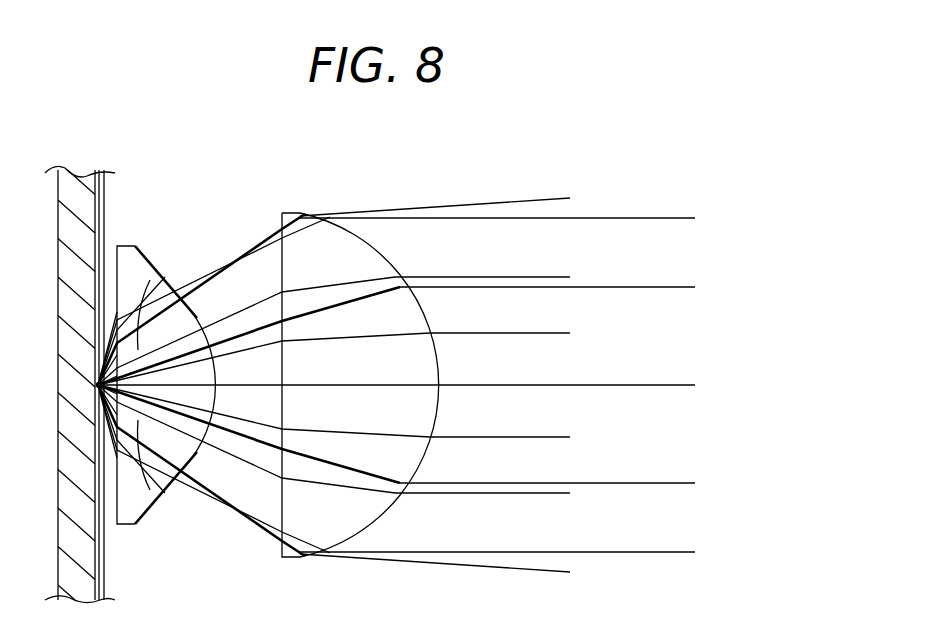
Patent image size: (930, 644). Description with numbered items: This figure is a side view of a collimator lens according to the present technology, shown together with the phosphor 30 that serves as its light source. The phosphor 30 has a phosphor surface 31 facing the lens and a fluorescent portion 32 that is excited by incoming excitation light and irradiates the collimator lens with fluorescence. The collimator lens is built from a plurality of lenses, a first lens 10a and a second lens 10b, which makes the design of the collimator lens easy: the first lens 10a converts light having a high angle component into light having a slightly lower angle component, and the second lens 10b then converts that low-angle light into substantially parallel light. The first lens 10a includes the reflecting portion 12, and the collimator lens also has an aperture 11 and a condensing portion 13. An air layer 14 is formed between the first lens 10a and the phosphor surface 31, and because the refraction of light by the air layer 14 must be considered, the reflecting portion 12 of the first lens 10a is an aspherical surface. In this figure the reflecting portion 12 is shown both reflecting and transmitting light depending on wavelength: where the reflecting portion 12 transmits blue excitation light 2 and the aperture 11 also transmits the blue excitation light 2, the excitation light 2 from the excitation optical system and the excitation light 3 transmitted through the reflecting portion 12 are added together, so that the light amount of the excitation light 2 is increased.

The blue excitation light 2 is at (482, 205).
The excitation light transmitted through the reflecting portion 3 is at (649, 216).
The first lens 10a is at (232, 214).
The second lens 10b is at (398, 190).
The aperture 11 is at (216, 364).
The reflecting portion 12 is at (166, 276).
The condensing portion 13 is at (143, 512).
The air layer 14 is at (110, 510).
The phosphor 30 is at (116, 384).
The phosphor surface 31 is at (102, 196).
The fluorescent portion 32 is at (83, 210).